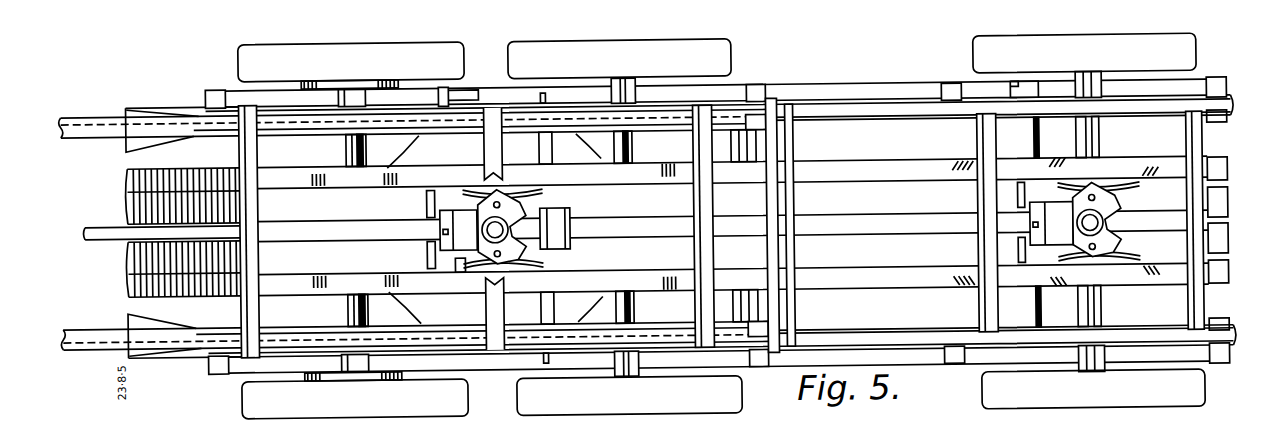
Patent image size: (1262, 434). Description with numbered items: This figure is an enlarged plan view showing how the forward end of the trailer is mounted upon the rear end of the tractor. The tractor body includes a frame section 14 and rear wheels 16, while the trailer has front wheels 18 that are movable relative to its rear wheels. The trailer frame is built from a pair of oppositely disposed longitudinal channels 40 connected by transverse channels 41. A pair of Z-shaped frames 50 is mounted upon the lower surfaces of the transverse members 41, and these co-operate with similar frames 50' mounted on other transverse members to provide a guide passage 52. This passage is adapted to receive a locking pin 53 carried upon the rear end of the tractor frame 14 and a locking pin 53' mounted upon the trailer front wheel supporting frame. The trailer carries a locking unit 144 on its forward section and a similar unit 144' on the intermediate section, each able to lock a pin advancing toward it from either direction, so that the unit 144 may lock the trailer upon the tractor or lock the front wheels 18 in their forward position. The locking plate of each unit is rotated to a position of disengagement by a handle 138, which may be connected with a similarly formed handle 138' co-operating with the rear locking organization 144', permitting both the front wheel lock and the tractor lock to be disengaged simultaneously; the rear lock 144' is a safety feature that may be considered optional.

The frame section 14 is at (95, 113).
The rear wheels 16 is at (725, 407).
The front wheels 18 is at (1016, 404).
The channels 40 is at (780, 110).
The transverse channels 41 is at (253, 151).
The Z-shaped frames 50 is at (734, 289).
The Z-shaped frames 50' is at (733, 227).
The guide passage 52 is at (387, 214).
The locking pin 53 is at (506, 226).
The locking pin 53' is at (1106, 219).
The handle 138 is at (469, 65).
The handle 138' is at (1034, 56).
The locking unit 144 is at (471, 231).
The locking unit 144' is at (1103, 222).